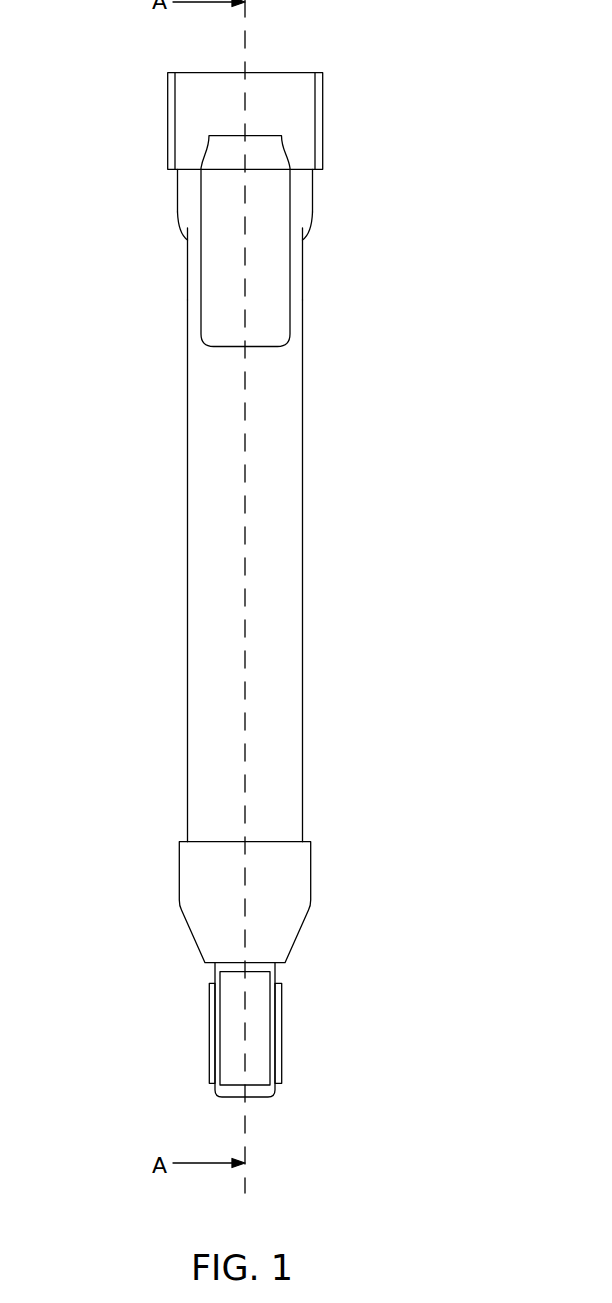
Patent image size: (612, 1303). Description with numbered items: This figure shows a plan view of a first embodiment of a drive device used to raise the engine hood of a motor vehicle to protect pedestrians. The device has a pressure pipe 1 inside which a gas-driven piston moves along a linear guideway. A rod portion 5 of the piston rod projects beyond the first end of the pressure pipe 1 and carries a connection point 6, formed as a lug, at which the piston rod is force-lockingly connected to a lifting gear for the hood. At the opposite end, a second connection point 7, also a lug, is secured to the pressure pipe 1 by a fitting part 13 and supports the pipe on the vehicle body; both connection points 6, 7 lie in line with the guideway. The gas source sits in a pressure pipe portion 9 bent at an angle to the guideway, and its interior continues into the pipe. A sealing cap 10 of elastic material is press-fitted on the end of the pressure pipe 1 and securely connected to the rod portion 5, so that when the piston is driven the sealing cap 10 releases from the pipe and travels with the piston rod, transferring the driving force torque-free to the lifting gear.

The pressure pipe 1 is at (303, 632).
The rod portion 5 is at (272, 965).
The connection point 6 is at (280, 1015).
The second connection point 7 is at (168, 106).
The pressure pipe portion 9 is at (303, 293).
The sealing cap 10 is at (300, 880).
The fitting part 13 is at (297, 208).